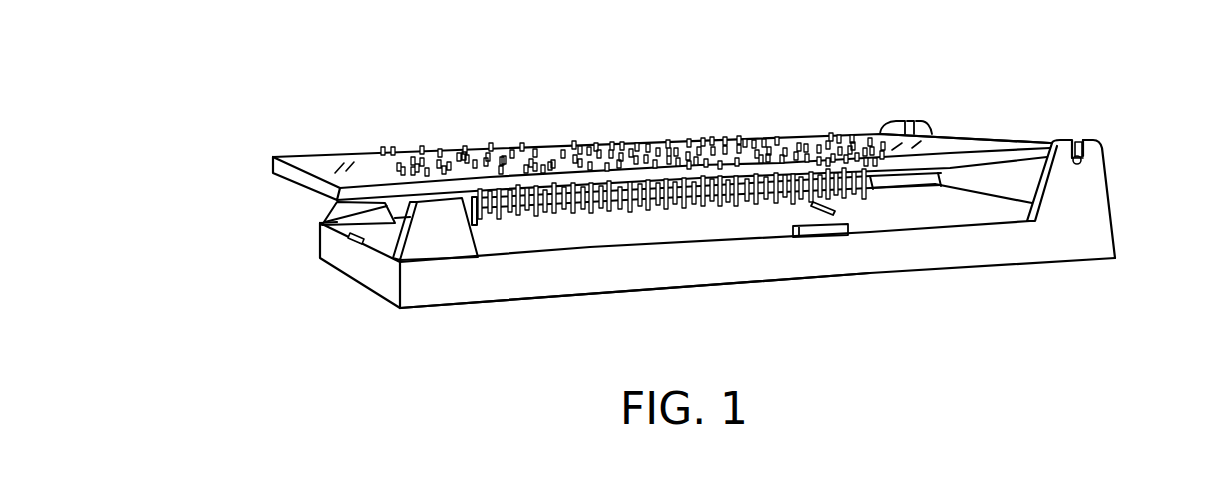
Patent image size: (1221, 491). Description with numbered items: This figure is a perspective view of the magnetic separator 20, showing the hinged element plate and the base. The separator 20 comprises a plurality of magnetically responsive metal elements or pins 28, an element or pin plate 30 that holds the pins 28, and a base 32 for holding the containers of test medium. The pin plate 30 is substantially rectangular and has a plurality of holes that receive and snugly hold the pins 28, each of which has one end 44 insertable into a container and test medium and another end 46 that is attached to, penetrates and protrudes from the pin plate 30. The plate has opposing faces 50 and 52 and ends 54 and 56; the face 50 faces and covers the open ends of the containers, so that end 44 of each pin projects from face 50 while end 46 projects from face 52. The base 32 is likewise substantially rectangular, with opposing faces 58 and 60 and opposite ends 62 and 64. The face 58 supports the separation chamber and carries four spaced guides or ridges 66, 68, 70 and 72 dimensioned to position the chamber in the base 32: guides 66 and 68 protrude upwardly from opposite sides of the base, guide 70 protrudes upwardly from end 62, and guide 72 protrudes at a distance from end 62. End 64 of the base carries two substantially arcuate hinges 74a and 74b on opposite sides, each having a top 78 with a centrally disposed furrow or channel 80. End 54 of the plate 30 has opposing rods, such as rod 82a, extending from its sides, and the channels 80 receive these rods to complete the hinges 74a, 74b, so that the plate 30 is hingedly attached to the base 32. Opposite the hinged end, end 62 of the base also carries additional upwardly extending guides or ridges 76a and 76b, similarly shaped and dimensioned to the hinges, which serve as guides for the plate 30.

The magnetic separator 20 is at (1097, 104).
The magnetically responsive metal elements or pins 28 is at (573, 142).
The element or pin plate 30 is at (822, 148).
The base 32 is at (897, 258).
The pin end 44 is at (733, 205).
The other pin end 46 is at (470, 147).
The face of pin plate 50 is at (307, 197).
The opposing face of pin plate 52 is at (328, 162).
The end of pin plate 54 is at (984, 143).
The end of pin plate 56 is at (273, 160).
The face of base 58 is at (930, 216).
The opposing face of base 60 is at (560, 299).
The end of base 62 is at (380, 285).
The end of base 64 is at (1000, 195).
The guide or ridge 66 is at (822, 239).
The guide or ridge 68 is at (752, 204).
The guide or ridge 70 is at (353, 241).
The guide or ridge 72 is at (838, 208).
The hinge 74a is at (1095, 193).
The hinge 74b is at (920, 122).
The guide or ridge 76a is at (432, 250).
The guide or ridge 76b is at (323, 223).
The top of hinge 78 is at (1092, 147).
The furrow or channel 80 is at (1075, 168).
The pin or rod 82a is at (1083, 160).